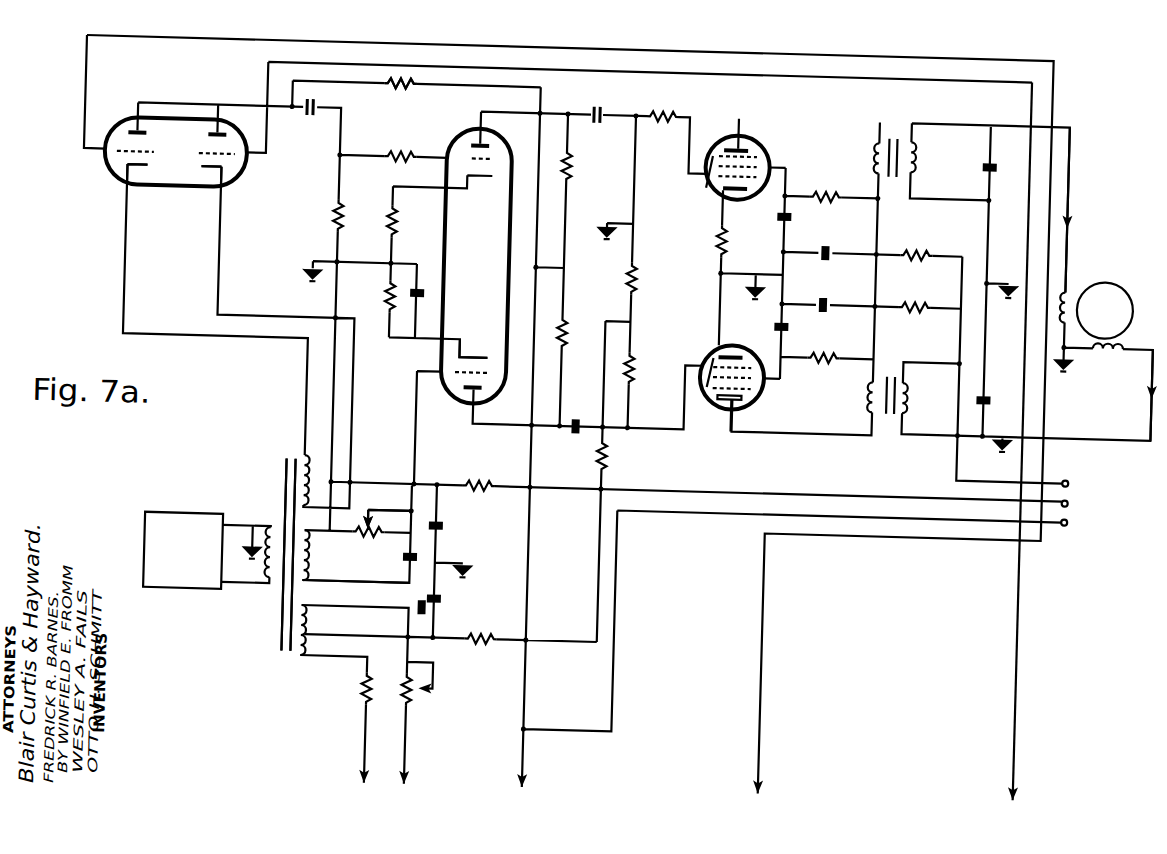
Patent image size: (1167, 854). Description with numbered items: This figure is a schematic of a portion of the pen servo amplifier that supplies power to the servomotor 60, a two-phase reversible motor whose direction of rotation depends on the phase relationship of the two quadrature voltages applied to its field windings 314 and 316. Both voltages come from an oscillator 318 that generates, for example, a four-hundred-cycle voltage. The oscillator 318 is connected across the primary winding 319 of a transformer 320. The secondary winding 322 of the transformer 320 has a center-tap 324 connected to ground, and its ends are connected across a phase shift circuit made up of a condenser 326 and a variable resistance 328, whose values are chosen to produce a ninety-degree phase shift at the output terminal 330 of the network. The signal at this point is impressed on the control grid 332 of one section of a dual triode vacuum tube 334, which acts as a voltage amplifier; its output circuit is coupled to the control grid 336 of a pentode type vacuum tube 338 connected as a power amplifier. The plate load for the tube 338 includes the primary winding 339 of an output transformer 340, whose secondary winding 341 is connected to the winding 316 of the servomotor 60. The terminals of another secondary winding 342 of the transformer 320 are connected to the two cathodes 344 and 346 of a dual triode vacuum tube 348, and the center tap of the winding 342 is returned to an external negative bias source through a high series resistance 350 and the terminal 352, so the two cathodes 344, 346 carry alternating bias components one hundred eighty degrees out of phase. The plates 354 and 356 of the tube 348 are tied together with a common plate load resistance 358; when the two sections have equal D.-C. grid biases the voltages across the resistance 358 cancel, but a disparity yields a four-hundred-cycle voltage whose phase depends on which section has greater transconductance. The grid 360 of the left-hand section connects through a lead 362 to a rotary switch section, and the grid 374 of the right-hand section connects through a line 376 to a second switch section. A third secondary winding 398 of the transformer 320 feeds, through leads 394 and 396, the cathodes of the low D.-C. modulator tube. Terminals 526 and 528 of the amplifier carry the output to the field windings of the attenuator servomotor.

The dual triode vacuum tube 348 is at (118, 116).
The plate 354 is at (142, 99).
The plate 356 is at (217, 99).
The grid 360 is at (114, 162).
The grid 374 is at (246, 159).
The cathode 344 is at (128, 184).
The cathode 346 is at (232, 181).
The plate load resistance 358 is at (401, 98).
The dual triode vacuum tube 334 is at (449, 237).
The control grid 332 is at (462, 375).
The control grid 336 is at (709, 334).
The pentode type vacuum tube 338 is at (729, 393).
The primary winding 339 is at (878, 371).
The secondary winding 341 is at (917, 368).
The output transformer 340 is at (900, 398).
The secondary winding 342 is at (322, 456).
The transformer 320 is at (299, 452).
The center-tap 324 is at (324, 559).
The secondary winding 322 is at (315, 584).
The third secondary winding 398 is at (350, 652).
The variable resistance 328 is at (386, 530).
The output terminal 330 is at (419, 518).
The condenser 326 is at (419, 553).
The oscillator 318 is at (200, 510).
The primary winding 319 is at (278, 512).
The series resistance 350 is at (508, 455).
The lead 394 is at (382, 728).
The lead 396 is at (427, 727).
The lead 362 is at (484, 35).
The line 376 is at (1033, 612).
The terminal 352 is at (1075, 455).
The terminal 528 is at (1077, 195).
The field winding 314 is at (1075, 265).
The servomotor 60 is at (1132, 267).
The field winding 316 is at (1121, 329).
The terminal 526 is at (1160, 366).